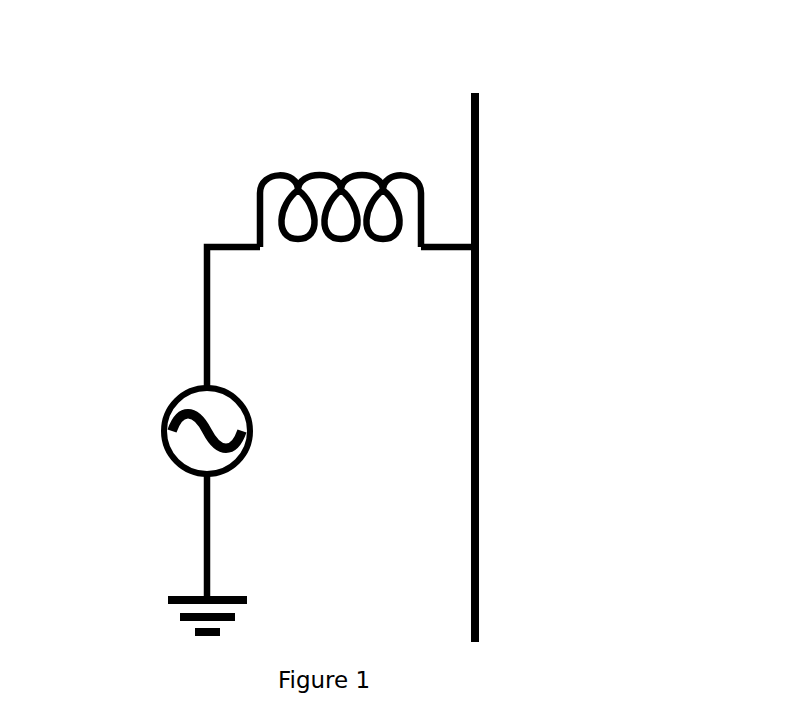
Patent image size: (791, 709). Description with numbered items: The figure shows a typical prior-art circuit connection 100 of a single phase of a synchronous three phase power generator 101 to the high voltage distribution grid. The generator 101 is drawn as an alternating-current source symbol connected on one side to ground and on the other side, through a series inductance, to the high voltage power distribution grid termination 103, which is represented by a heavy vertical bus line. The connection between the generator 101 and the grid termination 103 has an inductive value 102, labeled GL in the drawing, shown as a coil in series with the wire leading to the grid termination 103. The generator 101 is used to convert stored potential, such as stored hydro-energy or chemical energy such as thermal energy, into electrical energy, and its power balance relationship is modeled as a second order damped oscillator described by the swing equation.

The circuit connection 100 is at (398, 63).
The synchronous three phase power generator 101 is at (163, 420).
The inductive value 102 is at (303, 177).
The high voltage distribution grid termination 103 is at (482, 352).